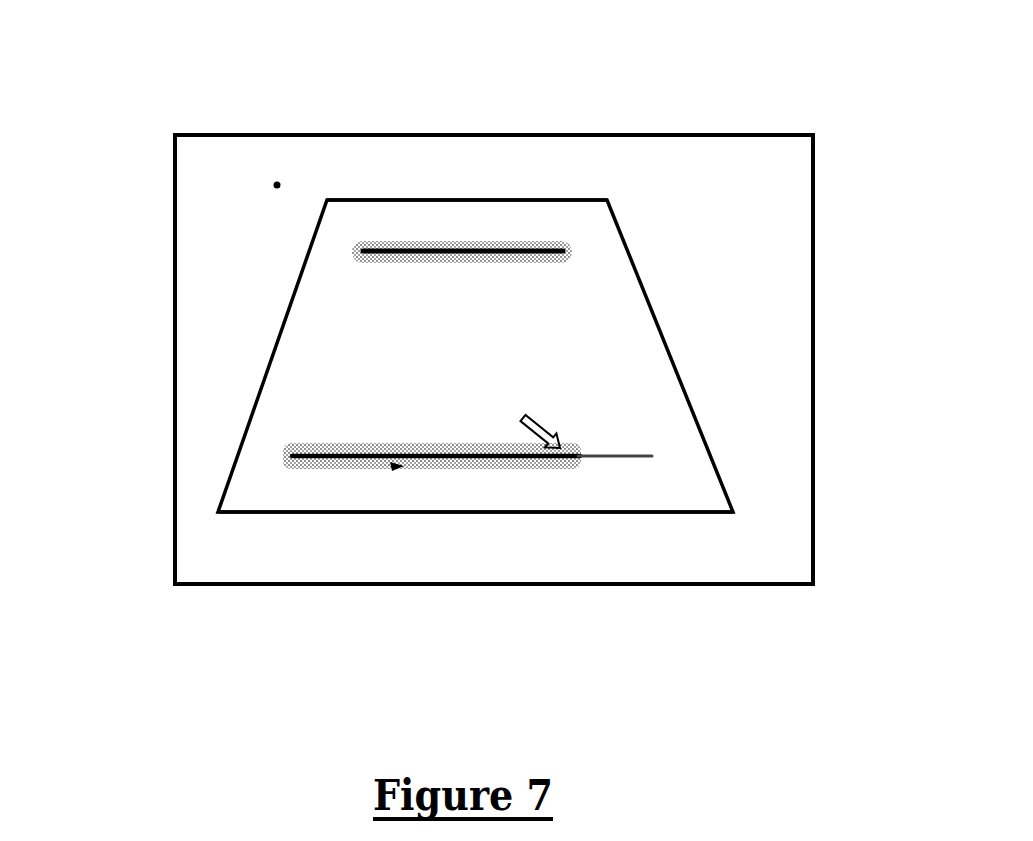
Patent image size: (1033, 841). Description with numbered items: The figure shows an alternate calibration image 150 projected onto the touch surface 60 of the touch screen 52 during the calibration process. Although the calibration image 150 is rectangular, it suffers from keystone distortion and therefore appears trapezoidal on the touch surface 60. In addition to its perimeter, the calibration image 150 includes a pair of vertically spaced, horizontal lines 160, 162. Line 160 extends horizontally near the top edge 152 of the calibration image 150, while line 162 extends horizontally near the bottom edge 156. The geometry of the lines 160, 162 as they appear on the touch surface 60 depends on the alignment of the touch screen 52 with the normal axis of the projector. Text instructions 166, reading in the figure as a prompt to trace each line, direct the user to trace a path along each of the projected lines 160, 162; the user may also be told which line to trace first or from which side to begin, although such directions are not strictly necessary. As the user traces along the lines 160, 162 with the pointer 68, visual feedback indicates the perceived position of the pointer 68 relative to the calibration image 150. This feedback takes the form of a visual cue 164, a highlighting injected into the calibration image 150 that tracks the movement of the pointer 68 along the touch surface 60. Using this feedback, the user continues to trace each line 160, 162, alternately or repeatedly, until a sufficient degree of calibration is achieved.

The touch screen 52 is at (214, 124).
The touch surface 60 is at (275, 182).
The calibration image 150 is at (240, 396).
The top edge 152 is at (563, 200).
The bottom edge 156 is at (697, 513).
The line 160 is at (465, 248).
The line 162 is at (635, 462).
The visual cue 164 is at (559, 478).
The text instructions 166 is at (600, 358).
The pointer 68 is at (549, 428).